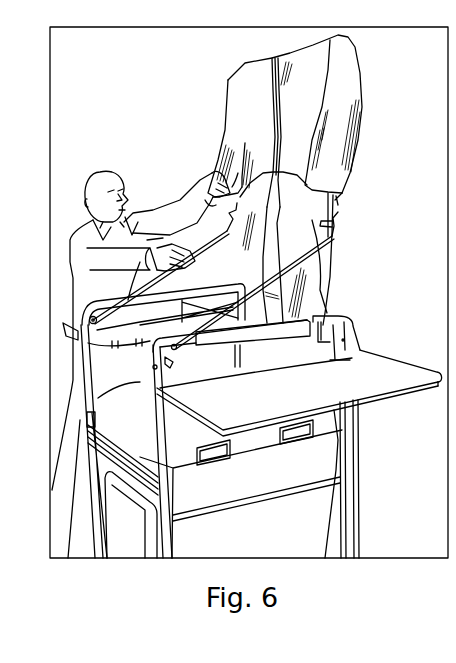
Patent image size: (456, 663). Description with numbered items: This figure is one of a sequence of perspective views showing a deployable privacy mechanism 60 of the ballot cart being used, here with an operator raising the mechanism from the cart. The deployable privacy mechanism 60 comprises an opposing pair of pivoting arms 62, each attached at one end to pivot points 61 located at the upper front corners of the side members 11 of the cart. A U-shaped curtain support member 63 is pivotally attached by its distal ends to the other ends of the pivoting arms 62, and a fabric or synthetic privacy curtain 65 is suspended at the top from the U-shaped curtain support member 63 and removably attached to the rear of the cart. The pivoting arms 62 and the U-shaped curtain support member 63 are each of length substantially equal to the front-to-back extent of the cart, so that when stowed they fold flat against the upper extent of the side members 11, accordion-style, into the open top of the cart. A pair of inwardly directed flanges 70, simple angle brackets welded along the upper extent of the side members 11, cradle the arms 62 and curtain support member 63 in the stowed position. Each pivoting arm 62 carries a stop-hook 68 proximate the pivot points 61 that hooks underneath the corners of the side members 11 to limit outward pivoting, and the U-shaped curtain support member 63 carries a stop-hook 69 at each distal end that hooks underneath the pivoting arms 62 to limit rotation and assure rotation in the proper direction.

The side members 11 is at (76, 316).
The deployable privacy mechanism 60 is at (172, 173).
The pivot points 61 is at (108, 314).
The pivoting arms 62 is at (208, 248).
The U-shaped curtain support member 63 is at (338, 203).
The privacy curtain 65 is at (304, 216).
The stop-hook 68 is at (167, 366).
The stop-hook 69 is at (334, 225).
The flanges 70 is at (264, 338).